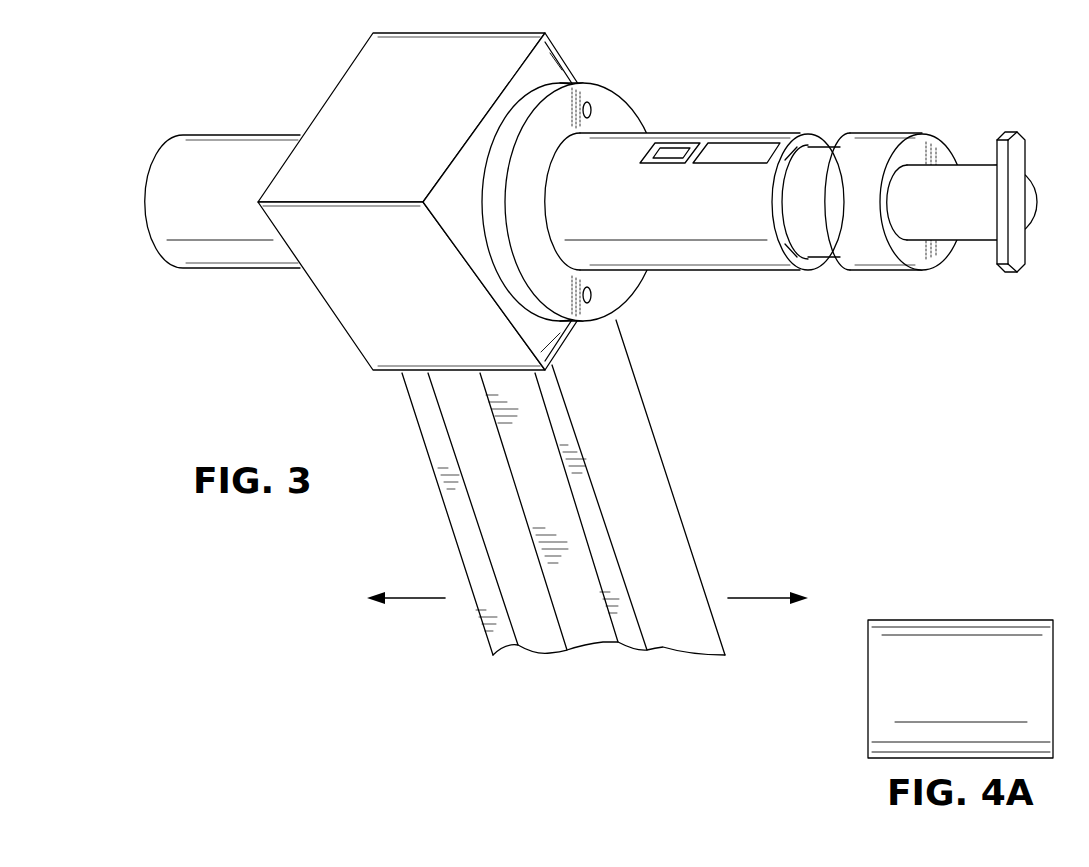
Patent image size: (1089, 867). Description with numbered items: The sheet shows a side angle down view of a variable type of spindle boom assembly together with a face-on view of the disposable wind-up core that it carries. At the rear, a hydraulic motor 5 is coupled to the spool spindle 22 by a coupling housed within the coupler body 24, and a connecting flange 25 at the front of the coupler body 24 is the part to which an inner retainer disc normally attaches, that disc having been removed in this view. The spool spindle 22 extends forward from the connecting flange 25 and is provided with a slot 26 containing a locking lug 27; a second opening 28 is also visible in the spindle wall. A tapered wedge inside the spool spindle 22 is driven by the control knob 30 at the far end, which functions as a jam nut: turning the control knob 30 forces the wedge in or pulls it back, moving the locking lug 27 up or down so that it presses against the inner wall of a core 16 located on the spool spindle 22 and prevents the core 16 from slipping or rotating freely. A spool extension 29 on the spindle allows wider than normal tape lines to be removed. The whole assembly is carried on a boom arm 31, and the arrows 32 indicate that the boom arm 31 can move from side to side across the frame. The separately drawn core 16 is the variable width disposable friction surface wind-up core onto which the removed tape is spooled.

In FIG. 3, the hydraulic motor 5 is at (228, 222).
In FIG. 4A, the core 16 is at (967, 620).
In FIG. 3, the spool spindle 22 is at (682, 222).
In FIG. 3, the coupler body 24 is at (362, 122).
In FIG. 3, the connecting flange 25 is at (620, 282).
In FIG. 3, the slot 26 is at (652, 150).
In FIG. 3, the locking lug 27 is at (672, 150).
In FIG. 3, the indicator window 28 is at (735, 150).
In FIG. 3, the spool extension 29 is at (875, 158).
In FIG. 3, the control knob 30 is at (967, 182).
In FIG. 3, the boom arm 31 is at (510, 432).
In FIG. 3, the arrows 32 is at (412, 597).